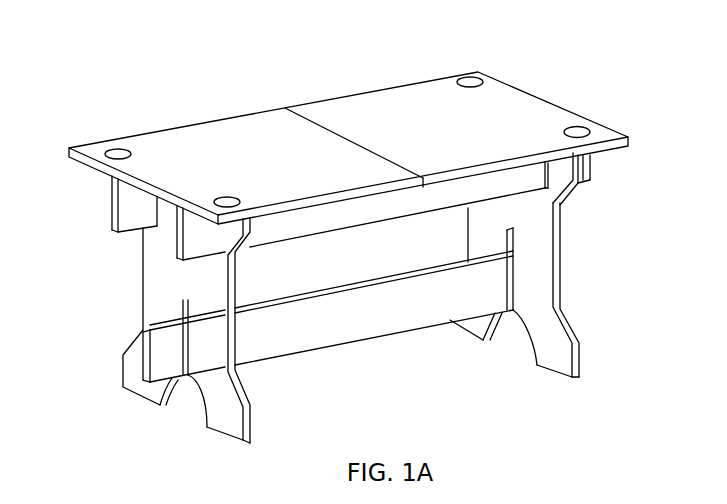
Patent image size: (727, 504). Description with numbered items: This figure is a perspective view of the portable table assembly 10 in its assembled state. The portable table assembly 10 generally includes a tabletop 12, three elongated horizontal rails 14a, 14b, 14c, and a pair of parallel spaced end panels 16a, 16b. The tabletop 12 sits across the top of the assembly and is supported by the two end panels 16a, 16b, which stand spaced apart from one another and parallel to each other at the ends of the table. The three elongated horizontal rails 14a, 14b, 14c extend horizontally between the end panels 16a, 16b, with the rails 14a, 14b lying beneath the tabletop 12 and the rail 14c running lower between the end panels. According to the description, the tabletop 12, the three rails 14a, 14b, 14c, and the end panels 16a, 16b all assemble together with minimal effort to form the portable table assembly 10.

The portable table assembly 10 is at (133, 77).
The tabletop 12 is at (540, 93).
The elongated horizontal rail 14a is at (111, 212).
The elongated horizontal rail 14b is at (421, 214).
The elongated horizontal rail 14c is at (372, 339).
The end panel 16a is at (142, 295).
The end panel 16b is at (560, 250).